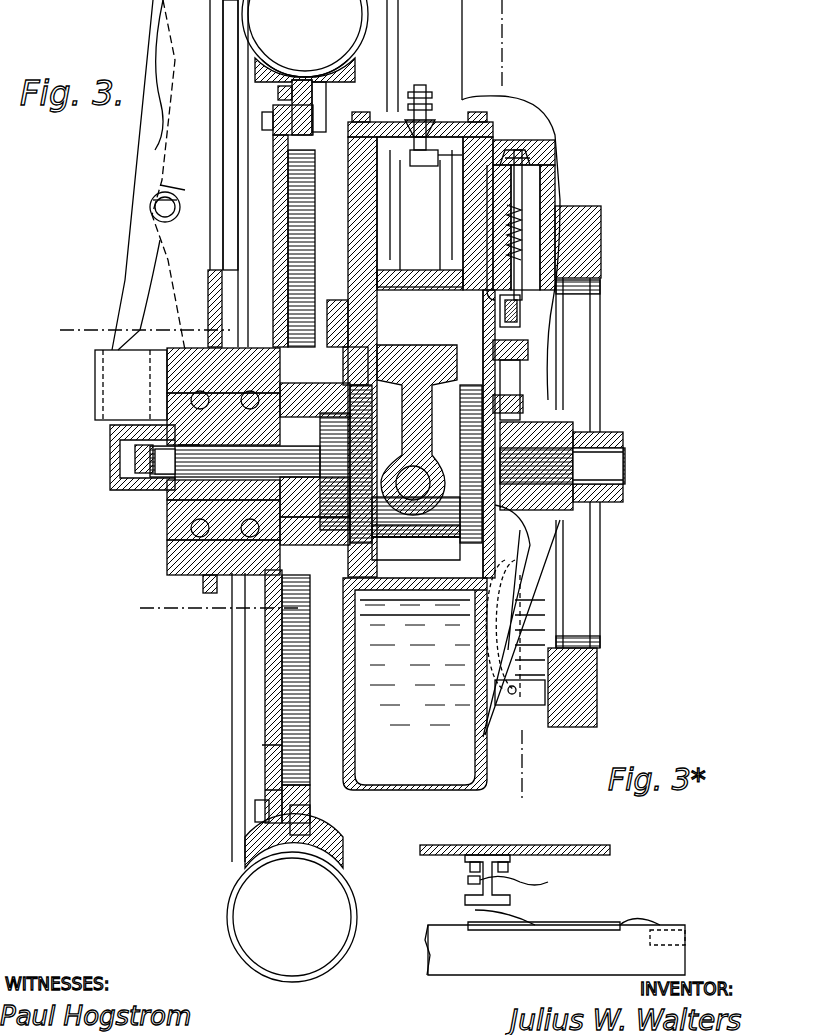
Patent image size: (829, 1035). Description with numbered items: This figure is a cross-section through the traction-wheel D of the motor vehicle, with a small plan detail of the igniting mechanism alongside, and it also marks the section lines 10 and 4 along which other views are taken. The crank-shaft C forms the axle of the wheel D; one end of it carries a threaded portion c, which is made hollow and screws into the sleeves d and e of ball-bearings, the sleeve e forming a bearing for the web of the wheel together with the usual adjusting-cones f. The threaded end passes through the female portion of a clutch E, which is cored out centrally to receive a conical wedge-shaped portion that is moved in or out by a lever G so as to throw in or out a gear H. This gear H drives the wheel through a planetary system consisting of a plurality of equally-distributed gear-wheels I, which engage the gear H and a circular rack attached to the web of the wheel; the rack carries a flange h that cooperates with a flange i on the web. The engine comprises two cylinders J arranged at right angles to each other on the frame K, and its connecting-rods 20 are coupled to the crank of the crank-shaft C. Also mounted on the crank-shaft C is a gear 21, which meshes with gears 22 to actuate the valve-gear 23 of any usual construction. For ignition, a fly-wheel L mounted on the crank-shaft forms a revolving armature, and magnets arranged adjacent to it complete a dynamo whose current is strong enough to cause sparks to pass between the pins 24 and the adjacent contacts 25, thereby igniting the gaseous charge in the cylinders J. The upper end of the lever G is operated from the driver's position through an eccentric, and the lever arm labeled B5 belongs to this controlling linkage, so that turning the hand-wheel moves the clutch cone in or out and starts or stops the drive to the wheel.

The traction-wheel D is at (297, 507).
The flange i is at (270, 62).
The flange h is at (324, 88).
The lever arm B5 is at (175, 147).
The lever G is at (139, 295).
The section line 10 10 is at (171, 469).
The sleeve d is at (110, 415).
The adjusting-cones f is at (168, 370).
The sleeve e is at (165, 526).
The threaded portion c is at (185, 490).
The clutch E is at (235, 461).
The gear H is at (360, 390).
The gear-wheels I is at (305, 262).
The cylinders J is at (420, 213).
The pins 24 is at (426, 97).
The contacts 25 is at (420, 162).
The valve-gear 23 is at (520, 205).
The gears 22 is at (525, 325).
The connecting-rods 20 is at (420, 420).
The gear 21 is at (535, 422).
The crank-shaft C is at (600, 468).
The fly-wheel L is at (602, 272).
The frame K is at (420, 790).
The section line 4 4 is at (519, 410).